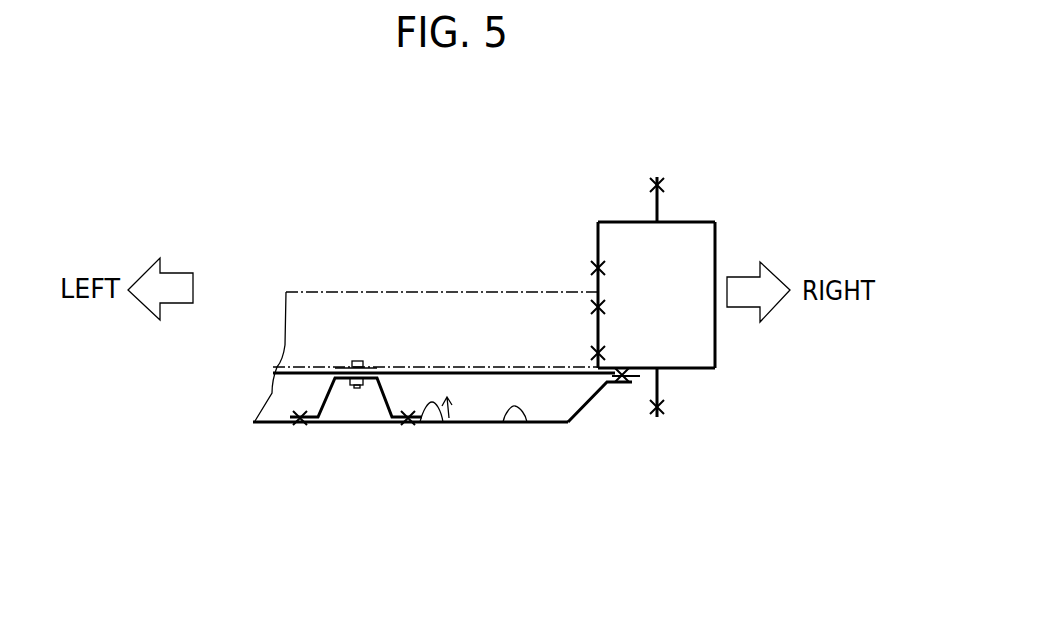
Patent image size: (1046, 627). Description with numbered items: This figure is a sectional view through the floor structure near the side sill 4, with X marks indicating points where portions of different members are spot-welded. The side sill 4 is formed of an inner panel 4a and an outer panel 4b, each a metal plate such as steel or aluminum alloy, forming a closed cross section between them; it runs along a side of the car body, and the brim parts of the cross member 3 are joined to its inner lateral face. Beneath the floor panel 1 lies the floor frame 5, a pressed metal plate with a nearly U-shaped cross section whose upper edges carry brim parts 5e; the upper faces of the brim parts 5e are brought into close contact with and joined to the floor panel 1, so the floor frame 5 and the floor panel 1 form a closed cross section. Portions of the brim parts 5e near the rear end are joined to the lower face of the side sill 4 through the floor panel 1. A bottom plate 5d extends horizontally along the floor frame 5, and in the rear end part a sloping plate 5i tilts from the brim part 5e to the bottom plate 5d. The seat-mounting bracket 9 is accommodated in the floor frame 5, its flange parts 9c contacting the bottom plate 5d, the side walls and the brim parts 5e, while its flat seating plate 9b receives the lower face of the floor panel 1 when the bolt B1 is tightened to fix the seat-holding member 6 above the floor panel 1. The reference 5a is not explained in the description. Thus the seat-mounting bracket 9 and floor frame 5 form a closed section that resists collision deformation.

The floor panel 1 is at (472, 376).
The cross member 3 is at (443, 367).
The side sill 4 is at (687, 222).
The inner panel 4a is at (612, 222).
The outer panel 4b is at (716, 245).
The floor frame 5 is at (553, 424).
The front portion of bracket 5a is at (449, 418).
The bottom plate 5d is at (526, 428).
The brim parts 5e is at (632, 384).
The sloping plate 5i is at (573, 408).
The seat-holding member 6 is at (370, 378).
The seat-mounting bracket 9 is at (320, 398).
The seating plate 9b is at (352, 365).
The flange parts 9c is at (440, 424).
The bolt B1 is at (357, 361).